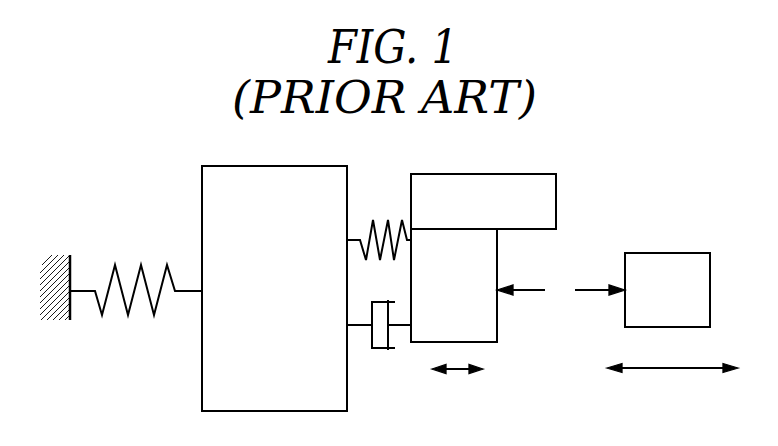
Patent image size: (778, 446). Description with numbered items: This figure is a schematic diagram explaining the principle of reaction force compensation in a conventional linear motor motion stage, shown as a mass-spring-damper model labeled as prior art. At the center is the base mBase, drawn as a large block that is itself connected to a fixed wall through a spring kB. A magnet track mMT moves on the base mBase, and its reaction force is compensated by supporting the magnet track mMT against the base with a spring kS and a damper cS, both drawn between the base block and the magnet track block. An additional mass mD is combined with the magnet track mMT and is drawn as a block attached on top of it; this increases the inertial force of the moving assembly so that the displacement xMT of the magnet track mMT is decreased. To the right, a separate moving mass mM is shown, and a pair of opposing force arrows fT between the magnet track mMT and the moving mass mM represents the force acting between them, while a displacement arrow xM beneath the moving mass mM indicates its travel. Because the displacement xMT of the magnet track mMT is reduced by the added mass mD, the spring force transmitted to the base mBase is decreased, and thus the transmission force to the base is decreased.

The base spring stiffness kB is at (136, 319).
The base mBase is at (274, 288).
The spring kS is at (379, 219).
The additional mass mD is at (483, 201).
The magnet track mMT is at (454, 285).
The damper cS is at (379, 346).
The transmitted force fT is at (561, 319).
The moving mass mM is at (667, 290).
The motor/table displacement xMT is at (457, 391).
The moving mass displacement xM is at (672, 390).